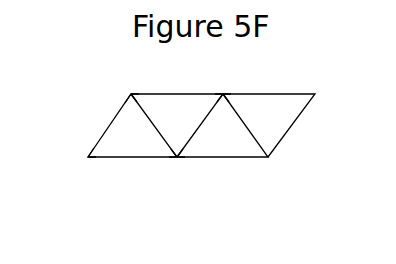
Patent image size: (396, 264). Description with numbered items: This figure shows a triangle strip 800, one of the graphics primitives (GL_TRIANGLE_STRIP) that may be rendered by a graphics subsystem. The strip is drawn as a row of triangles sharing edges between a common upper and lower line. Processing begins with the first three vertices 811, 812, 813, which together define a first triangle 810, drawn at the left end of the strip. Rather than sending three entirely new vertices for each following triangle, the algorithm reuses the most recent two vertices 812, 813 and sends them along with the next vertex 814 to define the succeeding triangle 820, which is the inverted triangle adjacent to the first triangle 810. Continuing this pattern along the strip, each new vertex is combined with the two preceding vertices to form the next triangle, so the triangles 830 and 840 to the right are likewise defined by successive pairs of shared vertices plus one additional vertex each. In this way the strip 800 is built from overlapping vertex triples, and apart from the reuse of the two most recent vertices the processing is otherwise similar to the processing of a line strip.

The triangle strip 800 is at (89, 133).
The first triangle 810 is at (124, 136).
The first vertex 811 is at (77, 166).
The second vertex 812 is at (127, 86).
The third vertex 813 is at (179, 167).
The next vertex 814 is at (221, 86).
The succeeding triangle 820 is at (181, 118).
The third triangle 830 is at (215, 132).
The fourth triangle 840 is at (265, 113).